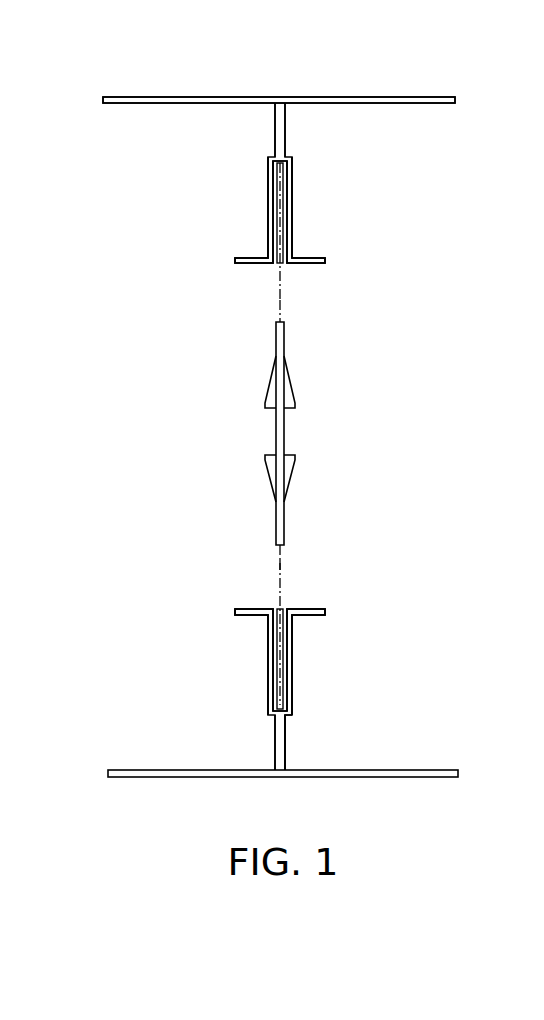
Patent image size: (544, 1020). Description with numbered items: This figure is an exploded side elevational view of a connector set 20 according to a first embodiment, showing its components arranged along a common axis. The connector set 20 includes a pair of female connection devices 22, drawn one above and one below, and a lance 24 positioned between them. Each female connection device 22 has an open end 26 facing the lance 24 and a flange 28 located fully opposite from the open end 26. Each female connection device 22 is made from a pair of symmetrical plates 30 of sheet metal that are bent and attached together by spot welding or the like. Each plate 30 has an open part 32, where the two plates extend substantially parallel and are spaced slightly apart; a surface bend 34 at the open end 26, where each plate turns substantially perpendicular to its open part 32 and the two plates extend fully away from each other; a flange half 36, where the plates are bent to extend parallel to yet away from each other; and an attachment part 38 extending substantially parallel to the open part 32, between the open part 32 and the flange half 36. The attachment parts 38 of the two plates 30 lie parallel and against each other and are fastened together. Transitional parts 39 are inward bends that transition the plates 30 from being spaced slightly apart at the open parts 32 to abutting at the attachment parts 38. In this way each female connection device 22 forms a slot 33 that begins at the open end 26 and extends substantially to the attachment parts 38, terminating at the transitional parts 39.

The connector set 20 is at (90, 97).
The female connection device 22 is at (383, 126).
The lance 24 is at (309, 436).
The open end 26 is at (270, 266).
The flange 28 is at (176, 104).
The plate 30 is at (108, 778).
The open part 32 is at (330, 153).
The slot 33 is at (277, 203).
The surface bend 34 is at (309, 266).
The flange half 36 is at (105, 92).
The attachment part 38 is at (266, 108).
The transitional part 39 is at (291, 717).